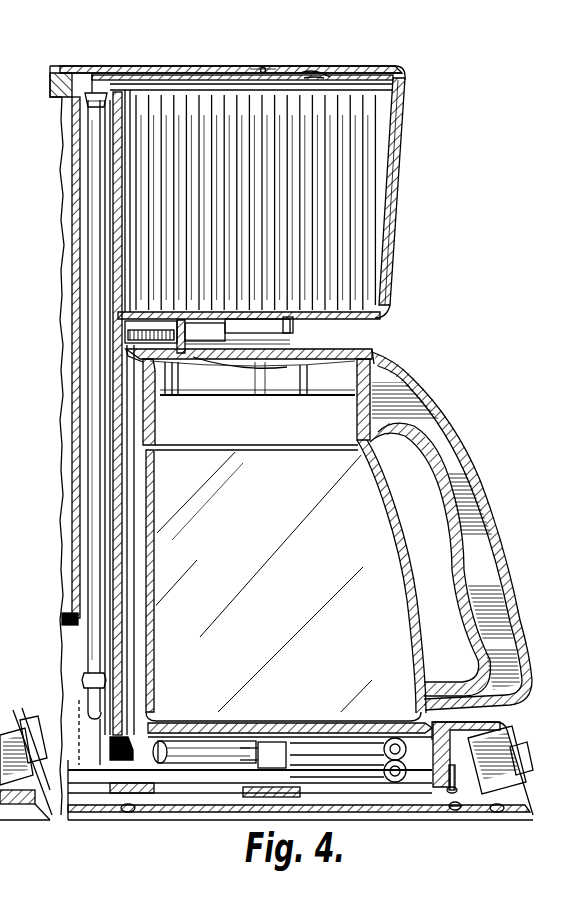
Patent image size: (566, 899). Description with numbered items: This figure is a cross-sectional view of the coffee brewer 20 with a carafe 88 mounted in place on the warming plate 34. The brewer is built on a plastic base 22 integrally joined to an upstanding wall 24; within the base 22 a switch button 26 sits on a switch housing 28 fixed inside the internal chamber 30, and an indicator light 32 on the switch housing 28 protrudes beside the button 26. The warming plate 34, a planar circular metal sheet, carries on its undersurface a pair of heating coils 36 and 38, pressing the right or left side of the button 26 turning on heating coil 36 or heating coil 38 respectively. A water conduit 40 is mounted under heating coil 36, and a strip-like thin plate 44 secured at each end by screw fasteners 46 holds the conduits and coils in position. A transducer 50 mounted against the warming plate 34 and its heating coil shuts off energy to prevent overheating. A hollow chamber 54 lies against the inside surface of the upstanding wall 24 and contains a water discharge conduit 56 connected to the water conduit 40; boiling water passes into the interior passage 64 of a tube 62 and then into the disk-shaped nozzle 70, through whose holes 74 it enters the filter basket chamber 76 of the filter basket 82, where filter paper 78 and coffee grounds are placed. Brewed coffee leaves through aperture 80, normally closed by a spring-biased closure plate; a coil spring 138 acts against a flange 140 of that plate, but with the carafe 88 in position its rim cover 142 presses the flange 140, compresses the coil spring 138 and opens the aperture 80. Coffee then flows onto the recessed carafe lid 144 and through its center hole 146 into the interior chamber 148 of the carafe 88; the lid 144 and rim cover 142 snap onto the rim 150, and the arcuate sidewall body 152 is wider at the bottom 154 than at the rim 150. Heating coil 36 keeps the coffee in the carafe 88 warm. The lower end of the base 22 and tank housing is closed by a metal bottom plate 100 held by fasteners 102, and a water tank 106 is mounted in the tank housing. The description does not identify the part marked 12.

The housing 12 is at (70, 428).
The coffee brewer 20 is at (434, 179).
The base 22 is at (532, 820).
The upstanding wall 24 is at (114, 510).
The switch button 26 is at (62, 830).
The switch housing 28 is at (481, 722).
The internal chamber 30 is at (464, 816).
The indicator light 32 is at (506, 748).
The warming plate 34 is at (322, 724).
The heating coil 36 is at (212, 744).
The heating coil 38 is at (25, 818).
The water conduit 40 is at (338, 816).
The thin plate 44 is at (258, 798).
The screw fasteners 46 is at (384, 790).
The transducer 50 is at (290, 742).
The hollow chamber 54 is at (106, 630).
The water discharge conduit 56 is at (90, 573).
The tube 62 is at (142, 66).
The interior passage 64 is at (197, 74).
The nozzle 70 is at (312, 70).
The holes 74 is at (263, 68).
The filter basket chamber 76 is at (385, 133).
The filter paper 78 is at (367, 256).
The aperture 80 is at (288, 327).
The filter basket 82 is at (405, 80).
The carafe 88 is at (455, 419).
The bottom plate 100 is at (190, 808).
The fasteners 102 is at (448, 811).
The water tank 106 is at (74, 466).
The coil spring 138 is at (108, 337).
The flange 140 is at (146, 374).
The rim cover 142 is at (144, 394).
The carafe lid 144 is at (344, 351).
The center hole 146 is at (268, 396).
The interior chamber 148 is at (376, 512).
The rim 150 is at (420, 394).
The sidewall body 152 is at (415, 547).
The bottom 154 is at (386, 716).